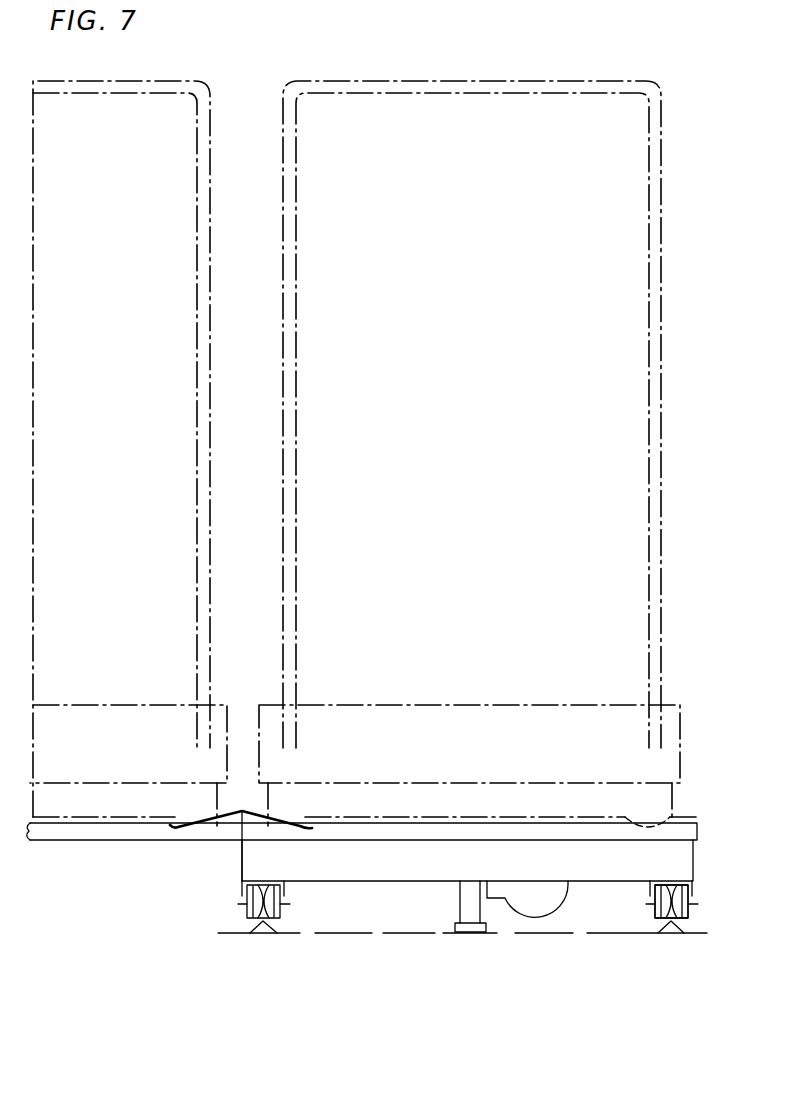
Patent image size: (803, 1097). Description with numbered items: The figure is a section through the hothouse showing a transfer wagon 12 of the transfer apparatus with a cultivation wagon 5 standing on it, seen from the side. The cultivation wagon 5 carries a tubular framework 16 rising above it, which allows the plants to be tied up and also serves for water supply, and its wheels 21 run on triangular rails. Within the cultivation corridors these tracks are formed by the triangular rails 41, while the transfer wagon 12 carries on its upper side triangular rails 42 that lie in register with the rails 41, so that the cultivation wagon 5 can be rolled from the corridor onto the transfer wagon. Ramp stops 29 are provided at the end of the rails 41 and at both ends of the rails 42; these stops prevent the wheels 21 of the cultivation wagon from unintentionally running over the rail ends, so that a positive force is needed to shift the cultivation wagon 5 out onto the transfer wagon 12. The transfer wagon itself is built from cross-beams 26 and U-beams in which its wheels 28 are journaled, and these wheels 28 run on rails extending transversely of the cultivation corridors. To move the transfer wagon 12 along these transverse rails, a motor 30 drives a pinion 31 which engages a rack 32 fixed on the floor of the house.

The cultivation wagon 5 is at (466, 725).
The transfer wagon 12 is at (331, 865).
The tubular framework 16 is at (648, 413).
The wheels 21 is at (175, 828).
The cross-beams 26 is at (257, 863).
The wheels 28 is at (655, 912).
The ramp stops 29 is at (660, 822).
The motor 30 is at (535, 905).
The pinion 31 is at (460, 897).
The rack 32 is at (470, 932).
The triangular rails 41 is at (80, 832).
The triangular rails 42 is at (610, 832).